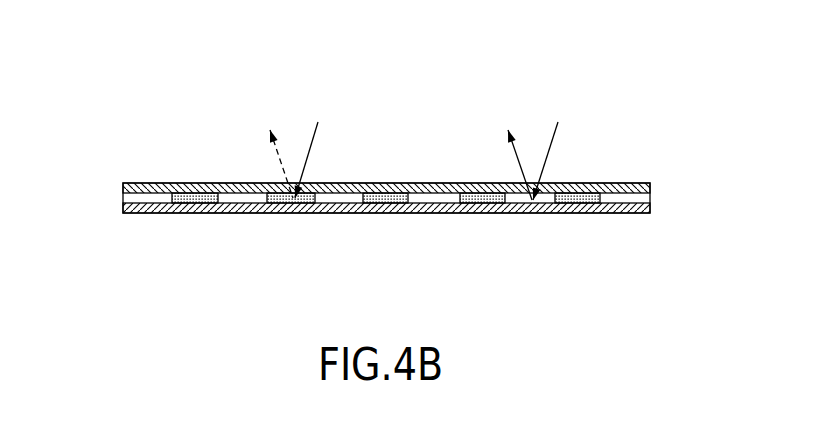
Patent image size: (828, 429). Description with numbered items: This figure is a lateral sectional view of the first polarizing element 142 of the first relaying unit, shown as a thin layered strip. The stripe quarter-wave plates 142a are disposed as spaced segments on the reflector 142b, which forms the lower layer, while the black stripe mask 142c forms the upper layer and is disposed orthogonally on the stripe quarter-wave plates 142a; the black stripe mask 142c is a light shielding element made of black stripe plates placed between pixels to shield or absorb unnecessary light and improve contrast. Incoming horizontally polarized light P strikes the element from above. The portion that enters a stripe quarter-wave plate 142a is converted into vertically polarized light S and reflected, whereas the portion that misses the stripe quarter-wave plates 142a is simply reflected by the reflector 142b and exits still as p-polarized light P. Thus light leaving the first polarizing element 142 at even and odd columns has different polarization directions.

The first polarizing element 142 is at (177, 70).
The stripe quarter-wave plates 142a is at (396, 200).
The reflector 142b is at (148, 213).
The black stripe mask 142c is at (152, 187).
The s-polarized light S is at (276, 147).
The p-polarized light P is at (433, 148).